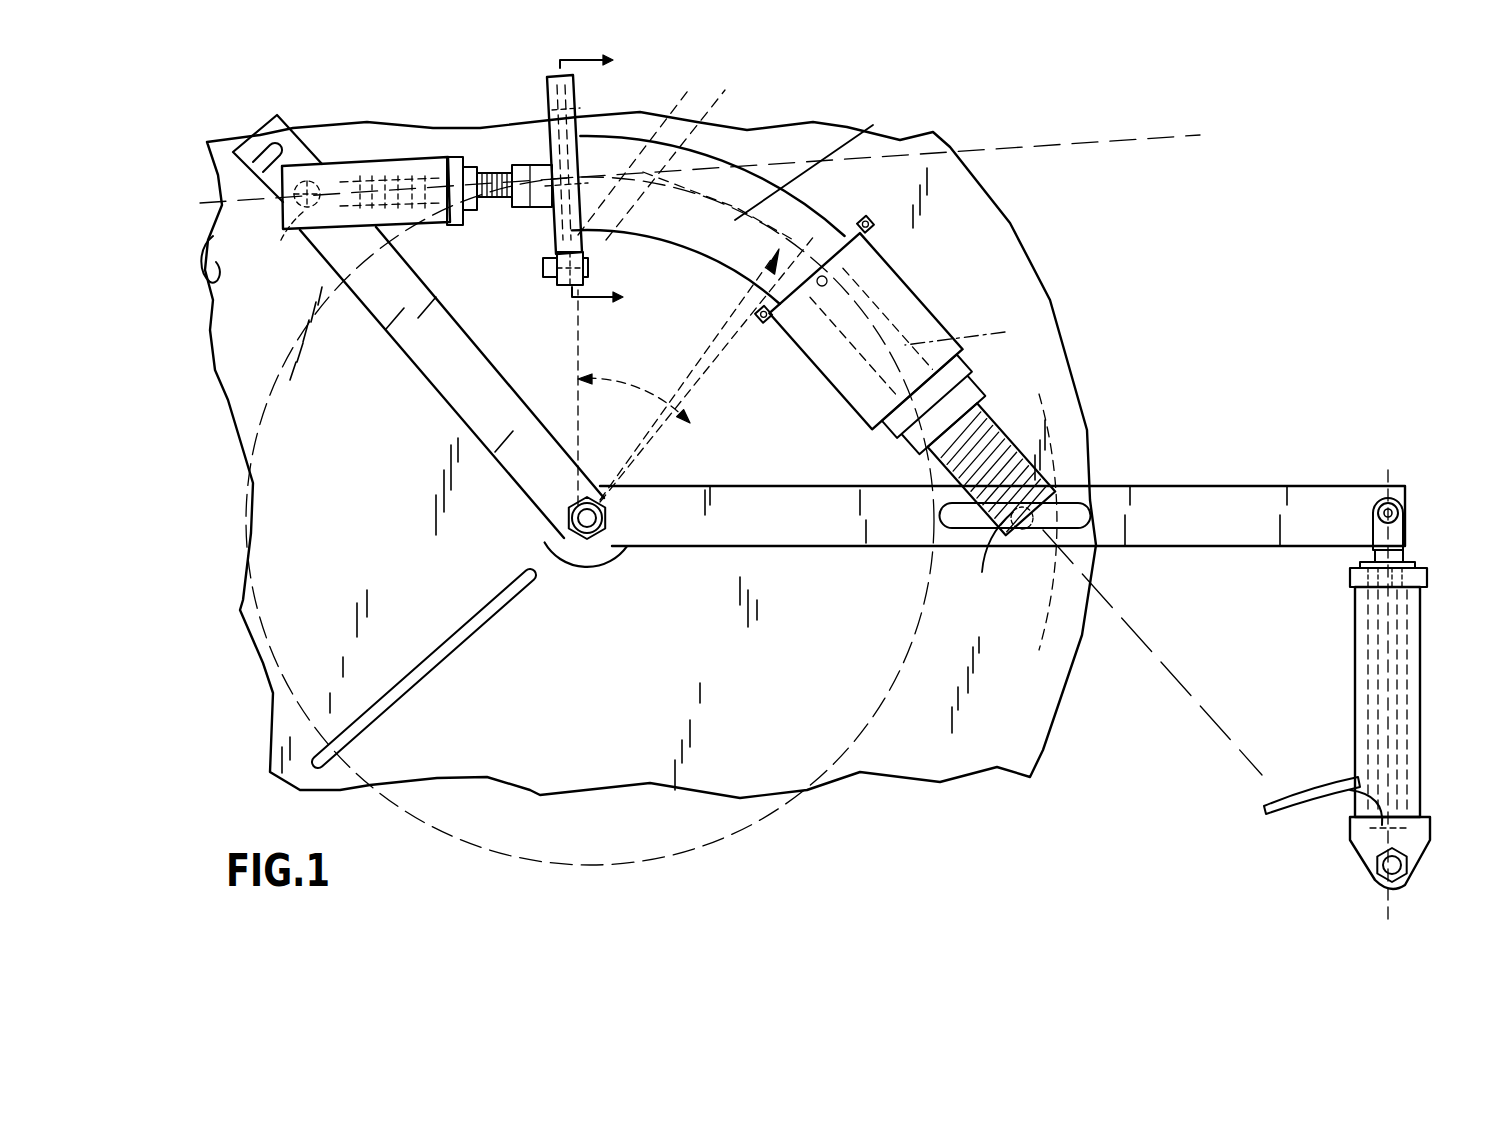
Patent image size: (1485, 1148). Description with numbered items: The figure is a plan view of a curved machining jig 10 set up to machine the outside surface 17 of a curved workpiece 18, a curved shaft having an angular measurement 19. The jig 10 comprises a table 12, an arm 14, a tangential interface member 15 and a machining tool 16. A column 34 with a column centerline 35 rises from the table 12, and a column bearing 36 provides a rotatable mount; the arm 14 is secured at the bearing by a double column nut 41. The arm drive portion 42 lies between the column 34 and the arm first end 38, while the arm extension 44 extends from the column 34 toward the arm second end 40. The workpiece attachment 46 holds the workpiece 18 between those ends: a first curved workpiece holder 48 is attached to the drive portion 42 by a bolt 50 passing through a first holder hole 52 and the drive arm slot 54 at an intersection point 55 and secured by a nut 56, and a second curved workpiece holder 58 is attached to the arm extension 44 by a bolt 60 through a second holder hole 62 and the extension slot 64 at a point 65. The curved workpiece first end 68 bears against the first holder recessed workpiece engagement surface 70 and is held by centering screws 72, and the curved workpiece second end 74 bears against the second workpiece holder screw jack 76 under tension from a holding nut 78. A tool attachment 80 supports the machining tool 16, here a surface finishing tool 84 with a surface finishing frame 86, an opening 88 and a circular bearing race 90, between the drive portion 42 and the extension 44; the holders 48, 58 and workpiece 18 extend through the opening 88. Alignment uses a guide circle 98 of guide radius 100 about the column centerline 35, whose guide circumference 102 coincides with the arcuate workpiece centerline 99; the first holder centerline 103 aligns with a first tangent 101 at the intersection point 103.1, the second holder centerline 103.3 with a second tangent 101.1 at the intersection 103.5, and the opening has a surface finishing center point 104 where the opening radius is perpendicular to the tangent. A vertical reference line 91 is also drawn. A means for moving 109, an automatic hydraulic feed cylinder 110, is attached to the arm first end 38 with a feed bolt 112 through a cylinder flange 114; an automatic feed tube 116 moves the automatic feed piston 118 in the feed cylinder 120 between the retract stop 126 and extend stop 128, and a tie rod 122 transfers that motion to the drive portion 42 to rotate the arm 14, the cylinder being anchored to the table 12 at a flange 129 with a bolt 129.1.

The curved machining jig 10 is at (806, 618).
The table 12 is at (590, 750).
The arm 14 is at (808, 530).
The tangential interface member 15 is at (721, 372).
The machining tool 16 is at (440, 194).
The outside surface 17 is at (735, 270).
The curved workpiece 18 is at (819, 163).
The angular measurement 19 is at (630, 382).
The column 34 is at (568, 520).
The column centerline 35 is at (589, 512).
The column bearing 36 is at (587, 567).
The arm first end 38 is at (1336, 487).
The arm second end 40 is at (273, 120).
The double column nut 41 is at (622, 555).
The arm drive portion 42 is at (1238, 530).
The arm extension 44 is at (440, 380).
The workpiece attachment 46 is at (917, 274).
The first curved workpiece holder 48 is at (934, 310).
The bolt 50 is at (1085, 480).
The first holder hole 52 is at (1048, 470).
The drive arm slot 54 is at (1092, 548).
The intersection point 55 is at (982, 574).
The nut 56 is at (1030, 545).
The second curved workpiece holder 58 is at (360, 166).
The bolt 60 is at (292, 203).
The second holder hole 62 is at (290, 232).
The extension slot 64 is at (270, 163).
The point 65 is at (320, 175).
The curved workpiece first end 68 is at (800, 348).
The first holder recessed workpiece engagement surface 70 is at (845, 285).
The centering screws 72 is at (870, 218).
The curved workpiece second end 74 is at (553, 155).
The second workpiece holder screw jack 76 is at (536, 172).
The holding nut 78 is at (476, 173).
The tool attachment 80 is at (560, 286).
The surface finishing tool 84 is at (552, 245).
The surface finishing frame 86 is at (588, 110).
The opening 88 is at (698, 150).
The circular bearing race 90 is at (742, 165).
The vertical reference line 91 is at (580, 336).
The guide circle 98 is at (803, 198).
The workpiece centerline 99 is at (793, 162).
The guide radius 100 is at (693, 362).
The first tangent 101 is at (1130, 625).
The second tangent 101.1 is at (214, 268).
The guide circumference 102 is at (728, 115).
The centerline 103 is at (968, 327).
The intersection point 103.1 is at (822, 287).
The centerline 103.3 is at (383, 192).
The intersection 103.5 is at (548, 79).
The surface finishing center point 104 is at (682, 105).
The means for moving 109 is at (1325, 697).
The automatic hydraulic feed cylinder 110 is at (1373, 673).
The feed bolt 112 is at (1378, 513).
The cylinder flange 114 is at (1372, 535).
The automatic feed tube 116 is at (1300, 802).
The automatic feed piston 118 is at (1362, 790).
The feed cylinder 120 is at (1380, 728).
The tie rod 122 is at (1370, 638).
The retract stop 126 is at (1378, 825).
The extend stop 128 is at (1365, 588).
The flange 129 is at (1367, 840).
The bolt 129.1 is at (1376, 875).